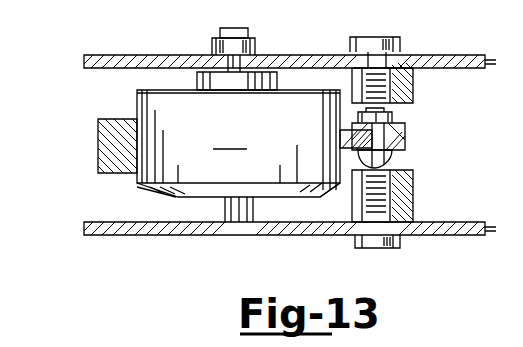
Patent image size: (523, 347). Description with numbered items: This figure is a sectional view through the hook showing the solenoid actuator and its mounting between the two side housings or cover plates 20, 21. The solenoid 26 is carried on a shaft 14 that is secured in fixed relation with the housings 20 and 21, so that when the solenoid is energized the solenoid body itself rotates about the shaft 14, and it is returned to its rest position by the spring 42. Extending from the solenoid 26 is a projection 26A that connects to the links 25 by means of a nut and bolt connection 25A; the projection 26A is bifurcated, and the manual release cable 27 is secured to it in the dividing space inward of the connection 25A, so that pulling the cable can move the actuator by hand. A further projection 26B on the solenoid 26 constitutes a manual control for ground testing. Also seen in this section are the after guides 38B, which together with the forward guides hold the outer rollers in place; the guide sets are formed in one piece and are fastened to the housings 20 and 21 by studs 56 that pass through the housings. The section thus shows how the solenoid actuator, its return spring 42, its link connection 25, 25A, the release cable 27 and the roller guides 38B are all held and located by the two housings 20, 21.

The shaft 14 is at (240, 236).
The side housing 20 is at (181, 226).
The side housing 21 is at (276, 54).
The links 25 is at (406, 138).
The nut and bolt connection 25A is at (398, 160).
The solenoid actuator 26 is at (238, 143).
The projection 26A is at (345, 188).
The projection 26B is at (97, 145).
The manual release cable 27 is at (398, 118).
The after guides 38B is at (416, 94).
The spring 42 is at (200, 78).
The studs 56 is at (400, 42).